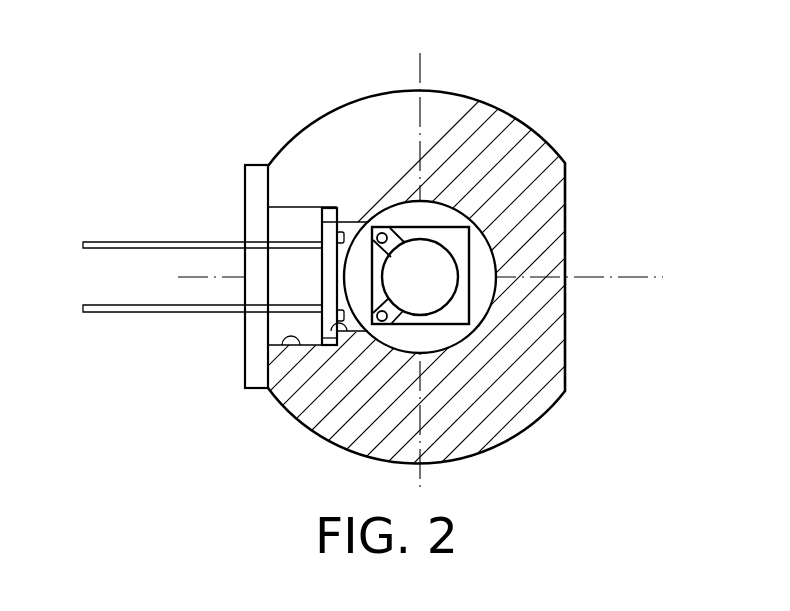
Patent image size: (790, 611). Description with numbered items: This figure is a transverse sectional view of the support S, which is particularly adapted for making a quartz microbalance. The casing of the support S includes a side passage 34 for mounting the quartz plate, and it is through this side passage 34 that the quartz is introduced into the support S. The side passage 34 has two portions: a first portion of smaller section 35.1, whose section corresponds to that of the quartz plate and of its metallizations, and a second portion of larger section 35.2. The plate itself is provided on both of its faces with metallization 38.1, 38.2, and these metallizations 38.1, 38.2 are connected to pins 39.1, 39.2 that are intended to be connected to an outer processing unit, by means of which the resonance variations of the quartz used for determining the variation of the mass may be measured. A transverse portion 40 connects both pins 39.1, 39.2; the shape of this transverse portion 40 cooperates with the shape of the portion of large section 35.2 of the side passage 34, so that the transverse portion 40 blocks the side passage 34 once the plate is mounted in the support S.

The support S is at (560, 125).
The side passage 34 is at (297, 207).
The first portion of smaller section 35.1 is at (327, 346).
The second portion of larger section 35.2 is at (285, 340).
The metallization 38.1 is at (437, 290).
The metallization 38.2 is at (382, 231).
The pin 39.1 is at (146, 312).
The pin 39.2 is at (146, 242).
The transverse portion 40 is at (326, 228).